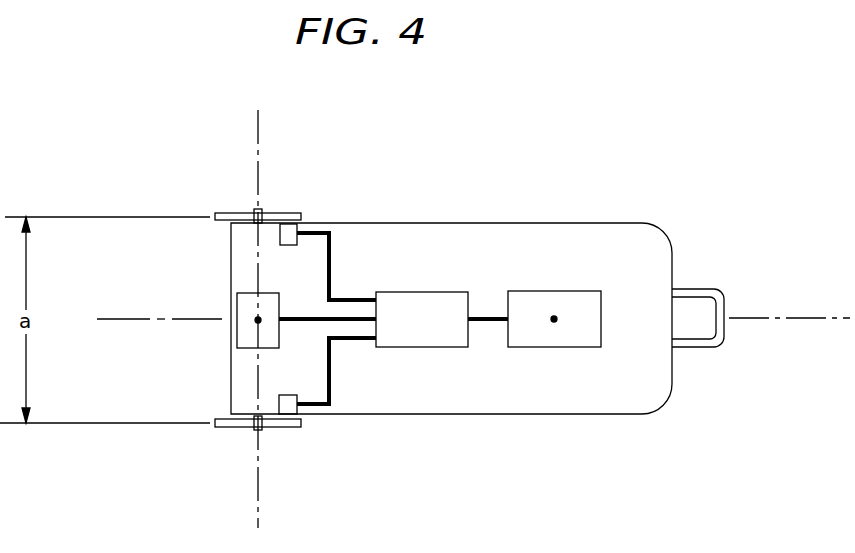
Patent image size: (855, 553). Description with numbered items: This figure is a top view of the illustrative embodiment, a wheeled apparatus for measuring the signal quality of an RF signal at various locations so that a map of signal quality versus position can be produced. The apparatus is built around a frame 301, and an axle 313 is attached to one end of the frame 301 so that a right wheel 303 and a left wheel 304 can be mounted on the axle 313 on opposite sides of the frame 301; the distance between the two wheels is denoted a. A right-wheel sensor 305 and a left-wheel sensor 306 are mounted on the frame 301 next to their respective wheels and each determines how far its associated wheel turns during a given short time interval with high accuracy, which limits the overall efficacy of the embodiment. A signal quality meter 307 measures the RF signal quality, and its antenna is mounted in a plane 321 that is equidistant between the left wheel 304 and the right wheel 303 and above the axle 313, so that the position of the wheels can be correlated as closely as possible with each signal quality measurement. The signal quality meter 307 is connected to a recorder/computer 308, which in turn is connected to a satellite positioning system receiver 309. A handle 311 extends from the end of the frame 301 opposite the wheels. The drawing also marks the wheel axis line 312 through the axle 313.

The frame 301 is at (556, 406).
The right wheel 303 is at (286, 430).
The left wheel 304 is at (222, 212).
The right-wheel sensor 305 is at (290, 395).
The left-wheel sensor 306 is at (296, 226).
The signal quality meter 307 is at (238, 338).
The recorder/computer 308 is at (416, 293).
The satellite positioning system receiver 309 is at (549, 291).
The handle 311 is at (697, 289).
The wheel axis line 312 is at (258, 522).
The axle 313 is at (265, 210).
The plane 321 is at (755, 320).